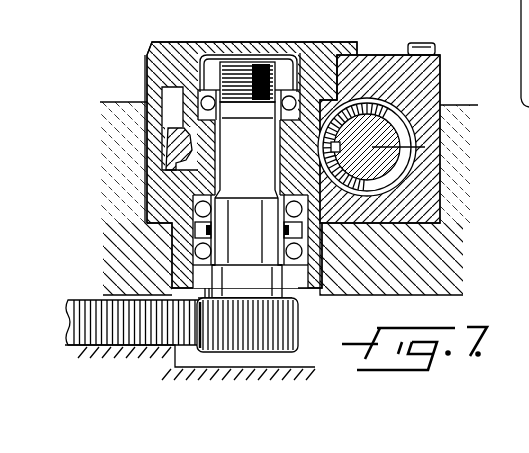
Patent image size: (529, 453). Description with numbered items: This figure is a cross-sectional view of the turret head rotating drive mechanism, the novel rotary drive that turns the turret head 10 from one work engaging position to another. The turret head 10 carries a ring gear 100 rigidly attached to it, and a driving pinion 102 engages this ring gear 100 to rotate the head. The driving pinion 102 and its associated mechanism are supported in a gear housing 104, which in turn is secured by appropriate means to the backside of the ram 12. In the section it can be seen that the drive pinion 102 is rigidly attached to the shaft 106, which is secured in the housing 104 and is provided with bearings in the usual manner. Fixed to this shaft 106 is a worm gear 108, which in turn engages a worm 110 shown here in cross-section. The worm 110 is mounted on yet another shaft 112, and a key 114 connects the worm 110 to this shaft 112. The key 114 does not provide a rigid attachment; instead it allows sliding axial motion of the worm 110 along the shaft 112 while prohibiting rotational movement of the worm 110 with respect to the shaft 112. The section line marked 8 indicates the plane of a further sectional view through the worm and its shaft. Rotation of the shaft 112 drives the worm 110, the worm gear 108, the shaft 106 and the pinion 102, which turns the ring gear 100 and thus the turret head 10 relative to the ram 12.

The section line 8- 8 is at (128, 147).
The turret head 10 is at (110, 355).
The ram 12 is at (436, 261).
The ring gear 100 is at (85, 300).
The driving pinion 102 is at (284, 314).
The gear housing 104 is at (376, 63).
The shaft 106 is at (248, 230).
The worm gear 108 is at (165, 172).
The worm 110 is at (393, 117).
The shaft 112 is at (400, 178).
The key 114 is at (340, 138).